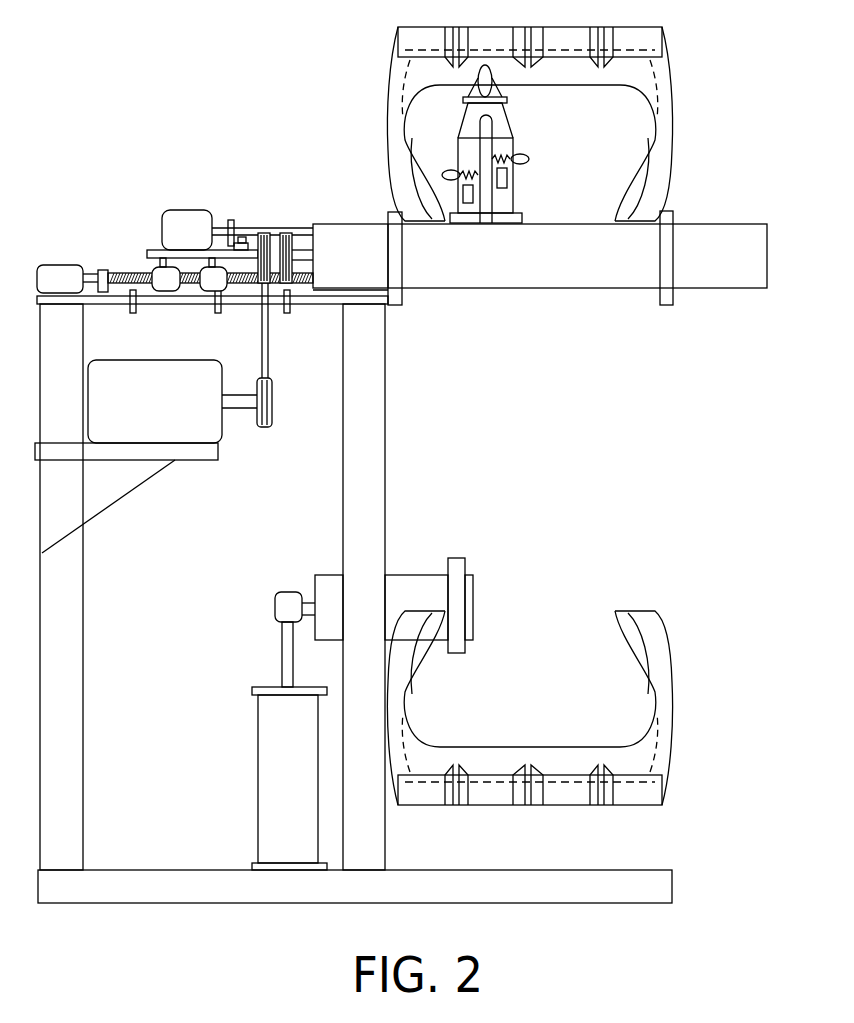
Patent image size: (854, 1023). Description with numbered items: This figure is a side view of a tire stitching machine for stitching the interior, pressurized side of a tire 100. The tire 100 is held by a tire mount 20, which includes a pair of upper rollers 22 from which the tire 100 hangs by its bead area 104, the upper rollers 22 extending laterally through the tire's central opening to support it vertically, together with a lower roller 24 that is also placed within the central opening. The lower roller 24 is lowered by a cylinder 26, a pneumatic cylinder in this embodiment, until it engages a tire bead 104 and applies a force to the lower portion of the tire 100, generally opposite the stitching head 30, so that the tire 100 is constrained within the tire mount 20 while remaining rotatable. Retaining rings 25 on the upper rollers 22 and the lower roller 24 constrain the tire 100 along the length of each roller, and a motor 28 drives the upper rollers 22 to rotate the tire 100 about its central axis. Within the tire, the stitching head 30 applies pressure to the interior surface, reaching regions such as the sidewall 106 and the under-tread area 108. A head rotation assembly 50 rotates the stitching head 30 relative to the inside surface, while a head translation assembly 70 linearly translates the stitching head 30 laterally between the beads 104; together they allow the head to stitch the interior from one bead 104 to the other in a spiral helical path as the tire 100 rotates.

The tire mount 20 is at (780, 213).
The upper rollers 22 is at (515, 270).
The lower roller 24 is at (422, 587).
The retaining rings 25 is at (402, 298).
The cylinder 26 is at (277, 762).
The motor 28 is at (215, 430).
The stitching head 30 is at (527, 122).
The head rotation assembly 50 is at (193, 192).
The head translation assembly 70 is at (70, 247).
The tire 100 is at (663, 42).
The bead area 104 is at (418, 208).
The tire sidewall 106 is at (398, 687).
The under-tread area 108 is at (540, 743).